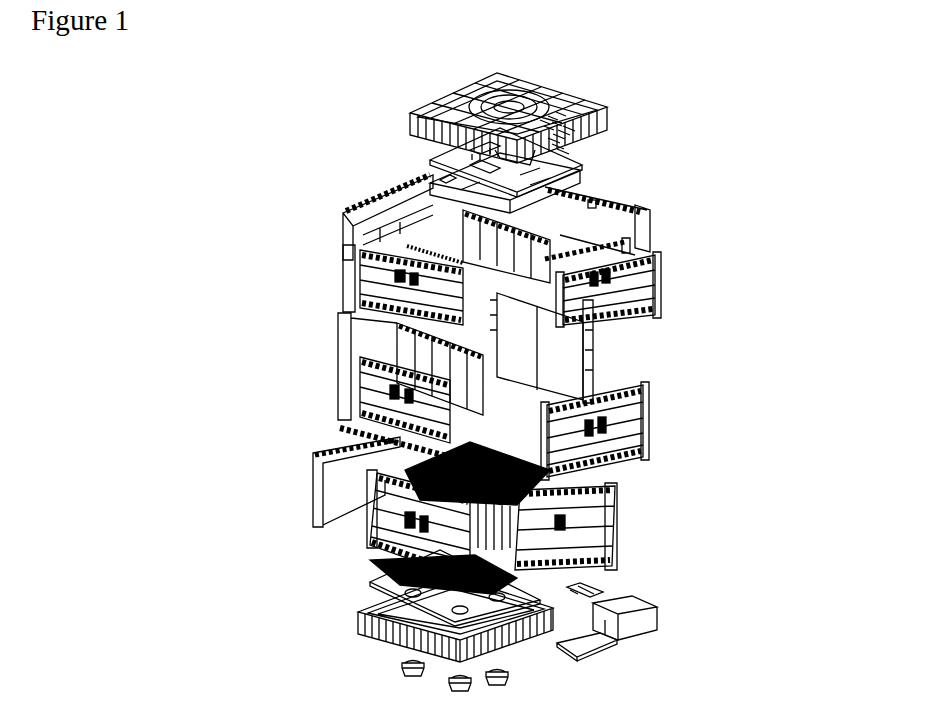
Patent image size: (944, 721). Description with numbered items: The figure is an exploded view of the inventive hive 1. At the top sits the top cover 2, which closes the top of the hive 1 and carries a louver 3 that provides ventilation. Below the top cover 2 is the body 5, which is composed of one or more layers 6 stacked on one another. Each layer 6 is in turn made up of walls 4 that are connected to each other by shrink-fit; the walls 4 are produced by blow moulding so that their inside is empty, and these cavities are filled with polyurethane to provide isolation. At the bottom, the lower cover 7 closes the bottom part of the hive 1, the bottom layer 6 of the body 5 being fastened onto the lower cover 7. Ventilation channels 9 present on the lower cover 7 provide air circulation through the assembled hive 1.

The hive 1 is at (737, 121).
The top cover 2 is at (581, 150).
The louver 3 is at (578, 150).
The wall 4 is at (640, 420).
The body 5 is at (327, 83).
The layer 6 is at (345, 302).
The lower cover 7 is at (358, 615).
The ventilation channel 9 is at (382, 585).